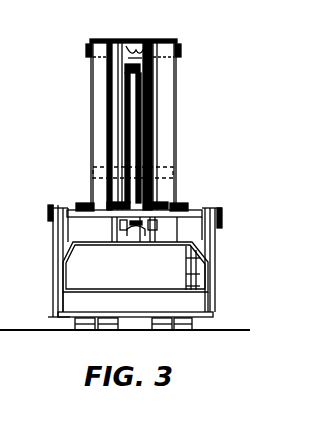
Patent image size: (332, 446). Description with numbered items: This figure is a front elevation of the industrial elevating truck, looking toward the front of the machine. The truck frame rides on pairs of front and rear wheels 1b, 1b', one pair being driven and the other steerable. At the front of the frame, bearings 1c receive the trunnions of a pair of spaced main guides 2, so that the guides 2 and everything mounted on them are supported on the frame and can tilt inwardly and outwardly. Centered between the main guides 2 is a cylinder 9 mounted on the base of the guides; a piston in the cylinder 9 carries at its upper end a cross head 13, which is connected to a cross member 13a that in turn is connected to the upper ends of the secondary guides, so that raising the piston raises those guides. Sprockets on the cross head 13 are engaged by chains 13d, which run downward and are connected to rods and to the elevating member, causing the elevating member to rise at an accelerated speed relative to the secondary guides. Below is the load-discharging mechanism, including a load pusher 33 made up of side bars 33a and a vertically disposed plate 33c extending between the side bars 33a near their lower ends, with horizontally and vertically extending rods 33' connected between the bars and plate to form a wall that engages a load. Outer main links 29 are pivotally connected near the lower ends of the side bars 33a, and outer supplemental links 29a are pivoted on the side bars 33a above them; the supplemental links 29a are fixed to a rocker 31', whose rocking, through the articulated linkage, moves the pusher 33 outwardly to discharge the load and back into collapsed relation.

The cross head 13 is at (135, 44).
The cross member 13a is at (155, 44).
The chains 13d is at (112, 86).
The cylinder 9 is at (150, 108).
The main guides 2 is at (168, 146).
The bearings 1c is at (203, 178).
The rocker 31' is at (120, 191).
The outer main links 29 is at (220, 257).
The outer supplemental links 29a is at (53, 267).
The load pusher 33 is at (135, 267).
The plate 33c is at (78, 298).
The rods 33' is at (156, 253).
The side bars 33a is at (200, 310).
The front wheels 1b is at (152, 336).
The rear wheels 1b' is at (177, 347).